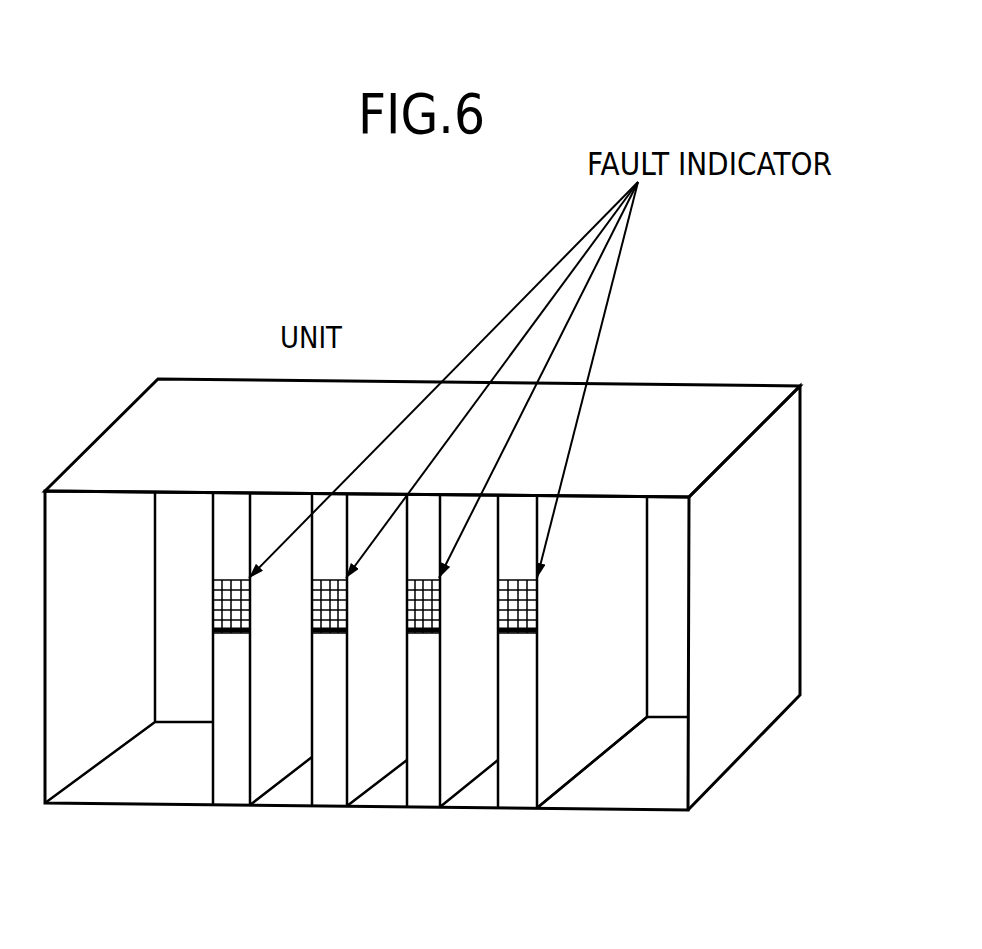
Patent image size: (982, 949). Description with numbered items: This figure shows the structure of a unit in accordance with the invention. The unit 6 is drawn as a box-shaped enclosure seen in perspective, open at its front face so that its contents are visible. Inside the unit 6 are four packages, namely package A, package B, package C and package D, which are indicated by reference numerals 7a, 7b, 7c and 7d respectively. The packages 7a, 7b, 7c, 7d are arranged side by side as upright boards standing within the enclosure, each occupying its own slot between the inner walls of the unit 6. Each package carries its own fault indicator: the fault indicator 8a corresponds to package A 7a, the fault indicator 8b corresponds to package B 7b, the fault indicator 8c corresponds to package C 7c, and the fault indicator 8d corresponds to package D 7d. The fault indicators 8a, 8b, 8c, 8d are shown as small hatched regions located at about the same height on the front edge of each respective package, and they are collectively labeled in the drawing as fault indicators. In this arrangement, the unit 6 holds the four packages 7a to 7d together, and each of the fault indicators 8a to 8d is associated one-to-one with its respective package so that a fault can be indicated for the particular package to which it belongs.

The unit 6 is at (128, 410).
The package A 7a is at (513, 798).
The package B 7b is at (418, 798).
The package C 7c is at (330, 795).
The package D 7d is at (235, 792).
The fault indicator 8a is at (537, 604).
The fault indicator 8b is at (440, 604).
The fault indicator 8c is at (347, 604).
The fault indicator 8d is at (250, 604).